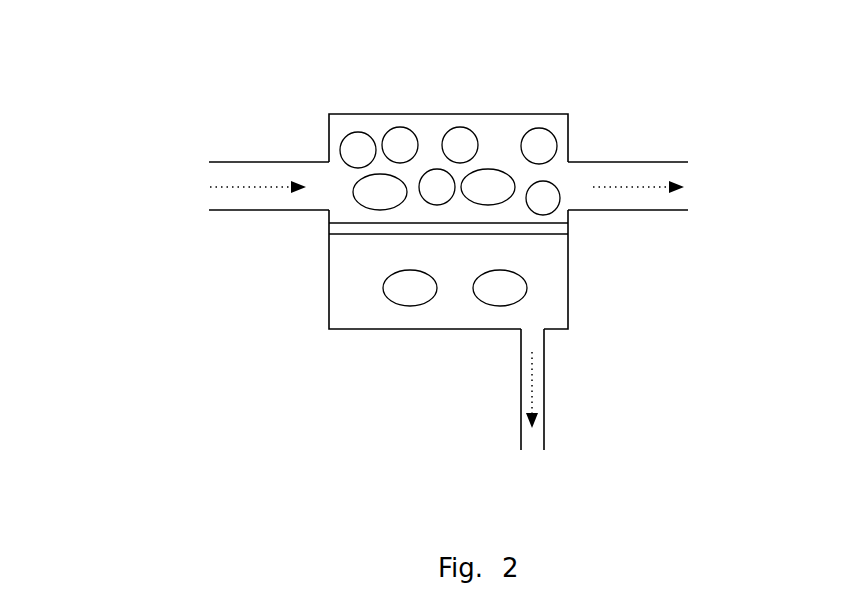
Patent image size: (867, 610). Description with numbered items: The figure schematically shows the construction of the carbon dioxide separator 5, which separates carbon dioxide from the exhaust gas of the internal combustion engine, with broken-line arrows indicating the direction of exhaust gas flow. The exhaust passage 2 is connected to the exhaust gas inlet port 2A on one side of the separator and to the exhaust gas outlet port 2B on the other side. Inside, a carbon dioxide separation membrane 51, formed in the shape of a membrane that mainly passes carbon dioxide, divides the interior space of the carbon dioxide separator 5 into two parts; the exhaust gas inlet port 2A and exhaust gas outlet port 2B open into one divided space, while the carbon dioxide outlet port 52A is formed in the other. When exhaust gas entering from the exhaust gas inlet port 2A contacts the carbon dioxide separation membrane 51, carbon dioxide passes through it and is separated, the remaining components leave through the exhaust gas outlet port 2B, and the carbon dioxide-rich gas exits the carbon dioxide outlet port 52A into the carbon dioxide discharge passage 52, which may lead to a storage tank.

The exhaust passage 2 is at (262, 160).
The exhaust gas inlet port 2A is at (328, 186).
The exhaust gas outlet port 2B is at (570, 187).
The carbon dioxide separator 5 is at (410, 90).
The carbon dioxide separation membrane 51 is at (545, 228).
The carbon dioxide discharge passage 52 is at (545, 395).
The carbon dioxide outlet port 52A is at (534, 331).